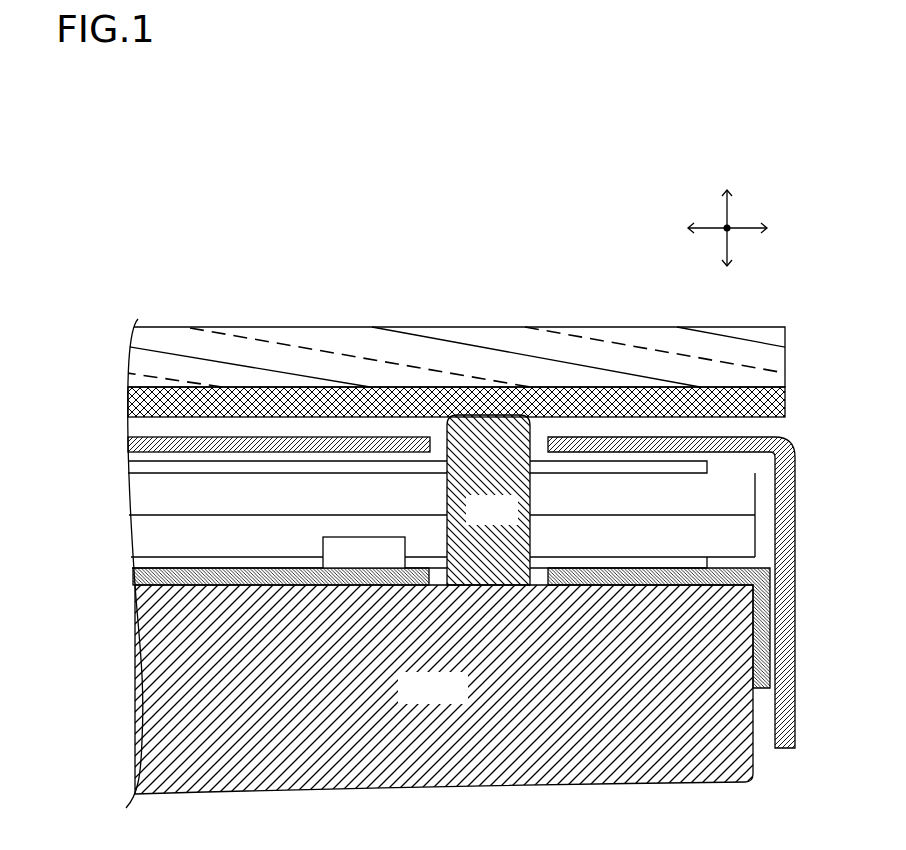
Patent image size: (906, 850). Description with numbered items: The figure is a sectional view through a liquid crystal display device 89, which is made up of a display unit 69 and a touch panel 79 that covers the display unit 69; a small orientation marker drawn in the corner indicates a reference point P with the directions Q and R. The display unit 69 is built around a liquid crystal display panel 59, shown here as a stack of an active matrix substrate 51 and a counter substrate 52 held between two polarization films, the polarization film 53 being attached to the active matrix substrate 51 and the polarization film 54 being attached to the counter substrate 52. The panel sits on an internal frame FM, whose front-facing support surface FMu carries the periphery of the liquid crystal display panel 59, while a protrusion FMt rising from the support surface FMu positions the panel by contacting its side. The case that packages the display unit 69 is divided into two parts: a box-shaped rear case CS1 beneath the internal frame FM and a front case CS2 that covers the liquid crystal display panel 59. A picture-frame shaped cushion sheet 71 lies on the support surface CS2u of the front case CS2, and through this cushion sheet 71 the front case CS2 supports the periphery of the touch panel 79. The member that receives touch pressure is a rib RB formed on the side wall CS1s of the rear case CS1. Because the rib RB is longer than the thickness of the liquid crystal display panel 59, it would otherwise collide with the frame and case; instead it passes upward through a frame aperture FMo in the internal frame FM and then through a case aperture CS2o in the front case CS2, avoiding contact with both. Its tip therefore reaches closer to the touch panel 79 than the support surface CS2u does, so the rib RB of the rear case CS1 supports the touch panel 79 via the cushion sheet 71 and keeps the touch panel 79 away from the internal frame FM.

The liquid crystal display device 89 is at (162, 242).
The touch panel 79 is at (130, 363).
The cushion sheet 71 is at (130, 400).
The front case CS2 is at (436, 582).
The support surface CS2u is at (185, 437).
The case aperture CS2o is at (545, 437).
The liquid crystal display panel 59 is at (417, 514).
The polarization film 54 is at (176, 468).
The counter substrate 52 is at (442, 515).
The active matrix substrate 51 is at (442, 537).
The polarization film 53 is at (419, 550).
The rib RB is at (488, 500).
The internal frame FM is at (425, 608).
The support surface FMu is at (238, 566).
The protrusion FMt is at (364, 553).
The frame aperture FMo is at (541, 566).
The rear case CS1 is at (415, 689).
The side wall CS1s is at (433, 688).
The display unit 69 is at (78, 415).
The reference point P is at (727, 228).
The Q direction Q is at (726, 231).
The R direction R is at (726, 229).